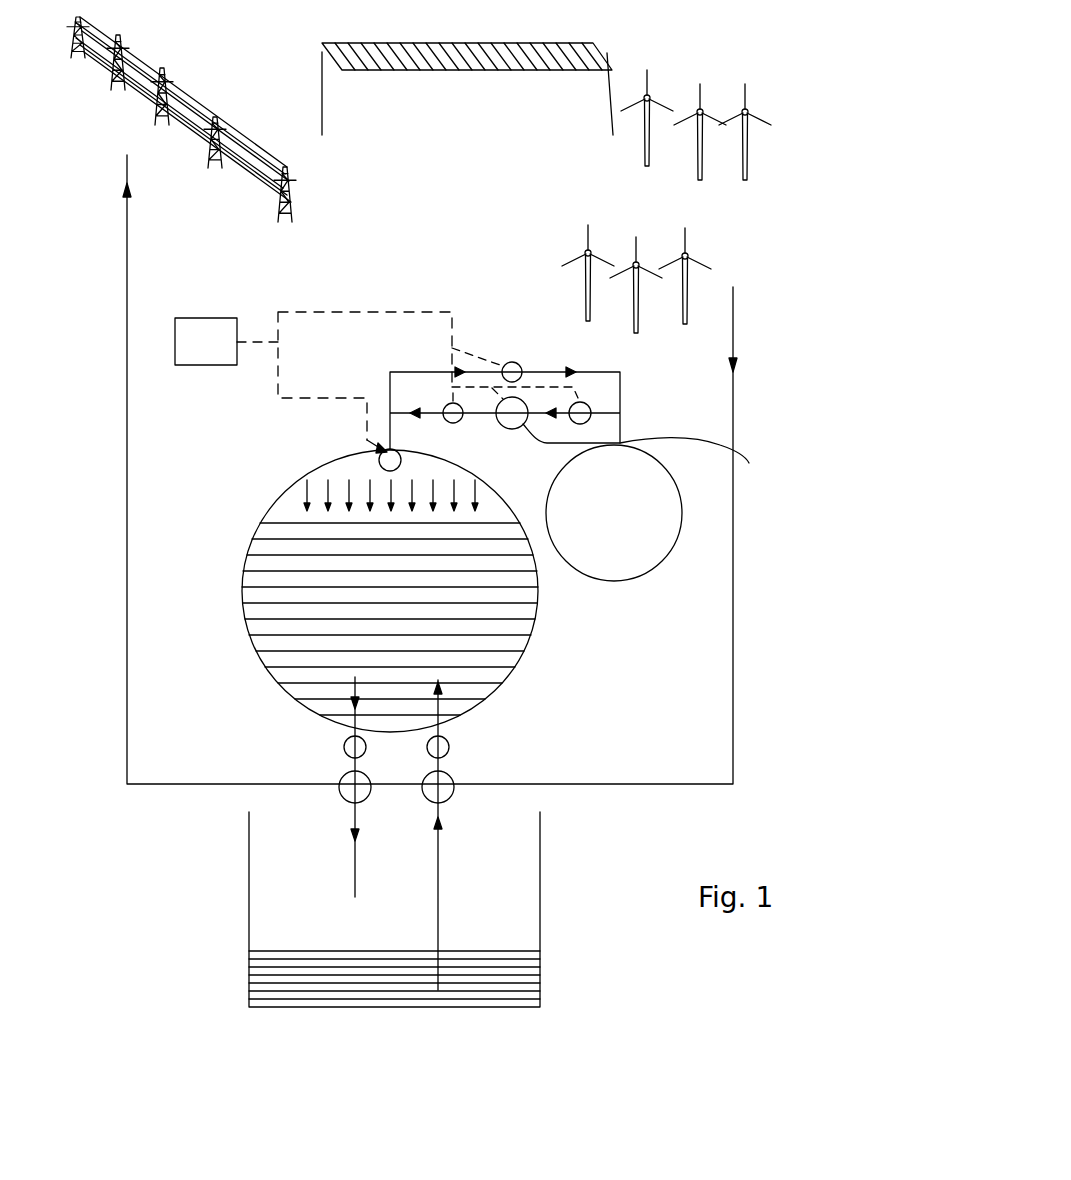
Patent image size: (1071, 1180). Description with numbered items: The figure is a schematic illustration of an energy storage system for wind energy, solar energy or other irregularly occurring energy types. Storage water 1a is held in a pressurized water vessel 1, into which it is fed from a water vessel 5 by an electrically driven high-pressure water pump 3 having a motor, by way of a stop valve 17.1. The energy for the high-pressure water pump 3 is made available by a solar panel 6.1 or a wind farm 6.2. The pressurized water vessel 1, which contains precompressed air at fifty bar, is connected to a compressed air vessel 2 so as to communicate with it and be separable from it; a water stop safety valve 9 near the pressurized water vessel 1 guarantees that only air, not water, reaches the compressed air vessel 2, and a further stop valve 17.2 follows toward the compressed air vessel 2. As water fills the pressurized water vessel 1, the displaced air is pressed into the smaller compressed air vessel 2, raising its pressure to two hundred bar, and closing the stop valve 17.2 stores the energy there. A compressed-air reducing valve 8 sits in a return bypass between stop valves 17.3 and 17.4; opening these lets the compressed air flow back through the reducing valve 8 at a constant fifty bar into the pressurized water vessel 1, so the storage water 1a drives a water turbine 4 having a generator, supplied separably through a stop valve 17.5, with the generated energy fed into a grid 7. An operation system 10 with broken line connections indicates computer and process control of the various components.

The pressurized water vessel 1 is at (535, 607).
The storage water 1a is at (487, 657).
The compressed air vessel 2 is at (640, 548).
The high-pressure water pump 3 is at (441, 791).
The water turbine 4 is at (345, 797).
The water vessel 5 is at (542, 936).
The solar panel 6.1 is at (480, 70).
The wind farm 6.2 is at (662, 158).
The grid 7 is at (240, 173).
The compressed-air reducing valve 8 is at (512, 418).
The water stop safety valve 9 is at (379, 453).
The operation system 10 is at (376, 382).
The stop valve 17.1 is at (450, 743).
The stop valve 17.2 is at (510, 361).
The stop valve 17.3 is at (443, 408).
The stop valve 17.4 is at (591, 406).
The stop valve 17.5 is at (344, 747).